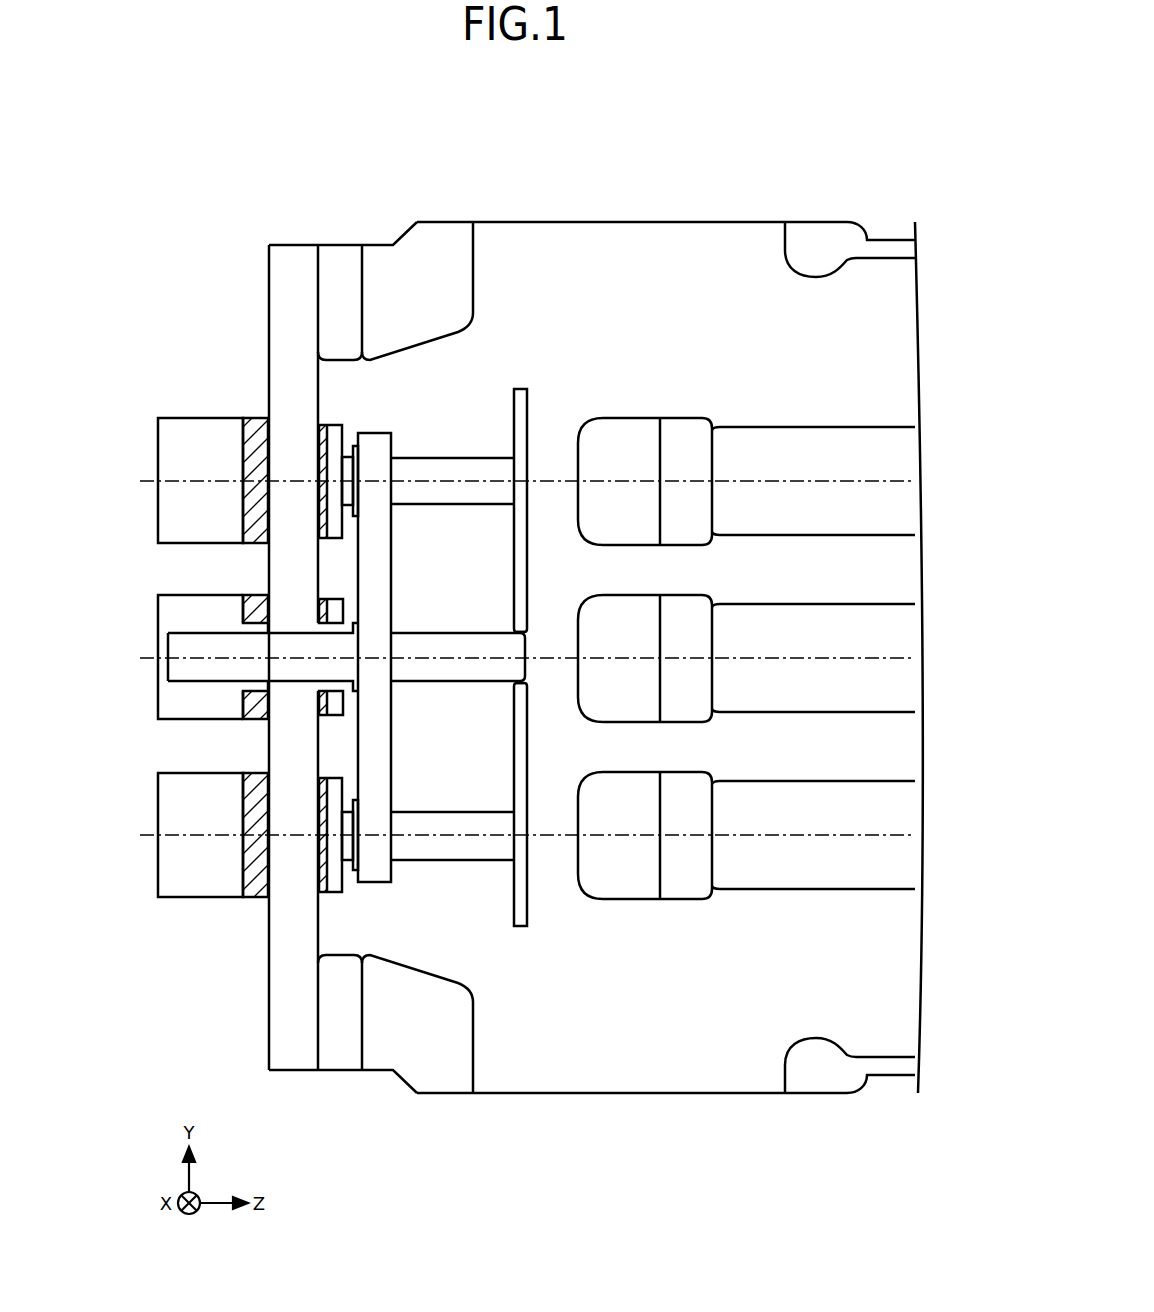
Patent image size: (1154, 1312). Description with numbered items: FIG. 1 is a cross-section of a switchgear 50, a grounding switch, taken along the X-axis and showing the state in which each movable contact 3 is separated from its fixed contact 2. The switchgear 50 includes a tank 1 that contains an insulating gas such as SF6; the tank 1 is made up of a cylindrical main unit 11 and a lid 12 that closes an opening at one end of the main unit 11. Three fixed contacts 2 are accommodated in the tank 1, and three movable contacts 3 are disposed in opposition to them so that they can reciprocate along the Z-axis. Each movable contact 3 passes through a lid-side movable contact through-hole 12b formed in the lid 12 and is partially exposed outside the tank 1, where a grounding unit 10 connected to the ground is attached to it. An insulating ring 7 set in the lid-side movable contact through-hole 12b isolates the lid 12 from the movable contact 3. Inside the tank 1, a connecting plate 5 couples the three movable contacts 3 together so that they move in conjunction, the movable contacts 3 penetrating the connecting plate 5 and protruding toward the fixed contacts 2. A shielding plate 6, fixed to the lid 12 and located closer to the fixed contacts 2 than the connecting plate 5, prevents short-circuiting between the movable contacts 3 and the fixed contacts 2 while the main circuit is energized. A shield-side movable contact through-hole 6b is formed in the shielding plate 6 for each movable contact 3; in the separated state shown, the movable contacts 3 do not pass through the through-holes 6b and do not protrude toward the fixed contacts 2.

The tank 1 is at (278, 172).
The fixed contact 2 is at (641, 418).
The movable contact 3 is at (453, 458).
The connecting plate 5 is at (371, 433).
The shielding plate 6 is at (528, 407).
The shield-side movable contact through-hole 6b is at (523, 640).
The insulating ring 7 is at (254, 426).
The grounding unit 10 is at (203, 420).
The main unit 11 is at (437, 236).
The lid 12 is at (300, 250).
The lid-side movable contact through-hole 12b is at (291, 691).
The switchgear 50 is at (718, 173).